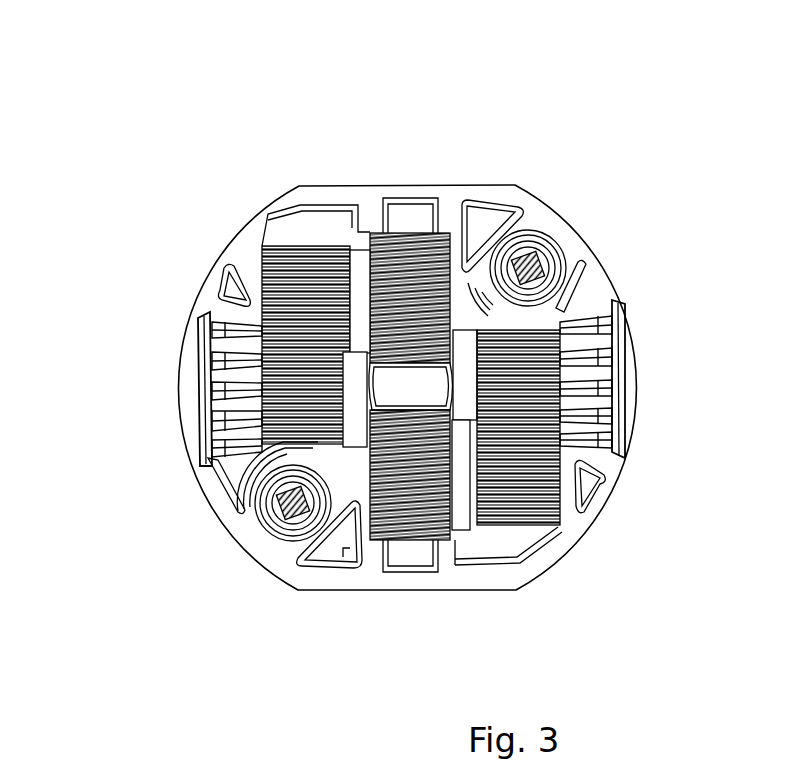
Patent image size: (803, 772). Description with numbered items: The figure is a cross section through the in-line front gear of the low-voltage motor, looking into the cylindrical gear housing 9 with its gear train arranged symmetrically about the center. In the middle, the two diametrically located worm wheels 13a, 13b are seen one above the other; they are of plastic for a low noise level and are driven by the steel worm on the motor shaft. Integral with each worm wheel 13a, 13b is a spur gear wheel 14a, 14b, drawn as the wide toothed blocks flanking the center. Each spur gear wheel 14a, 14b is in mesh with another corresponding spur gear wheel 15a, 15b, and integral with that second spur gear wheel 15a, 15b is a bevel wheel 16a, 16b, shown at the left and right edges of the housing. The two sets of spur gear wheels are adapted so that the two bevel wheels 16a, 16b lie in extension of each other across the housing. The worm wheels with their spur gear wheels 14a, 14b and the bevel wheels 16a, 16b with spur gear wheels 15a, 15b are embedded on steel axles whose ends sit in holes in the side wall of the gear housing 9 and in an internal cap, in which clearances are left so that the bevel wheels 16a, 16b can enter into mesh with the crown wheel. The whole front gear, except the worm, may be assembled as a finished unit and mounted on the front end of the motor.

The gear housing 9 is at (407, 387).
The worm wheel 13a is at (400, 210).
The worm wheel 13b is at (413, 540).
The spur gear wheel 14a is at (295, 265).
The spur gear wheel 14b is at (511, 525).
The spur gear wheel 15a is at (240, 490).
The spur gear wheel 15b is at (590, 288).
The bevel wheel 16a is at (205, 450).
The bevel wheel 16b is at (618, 298).